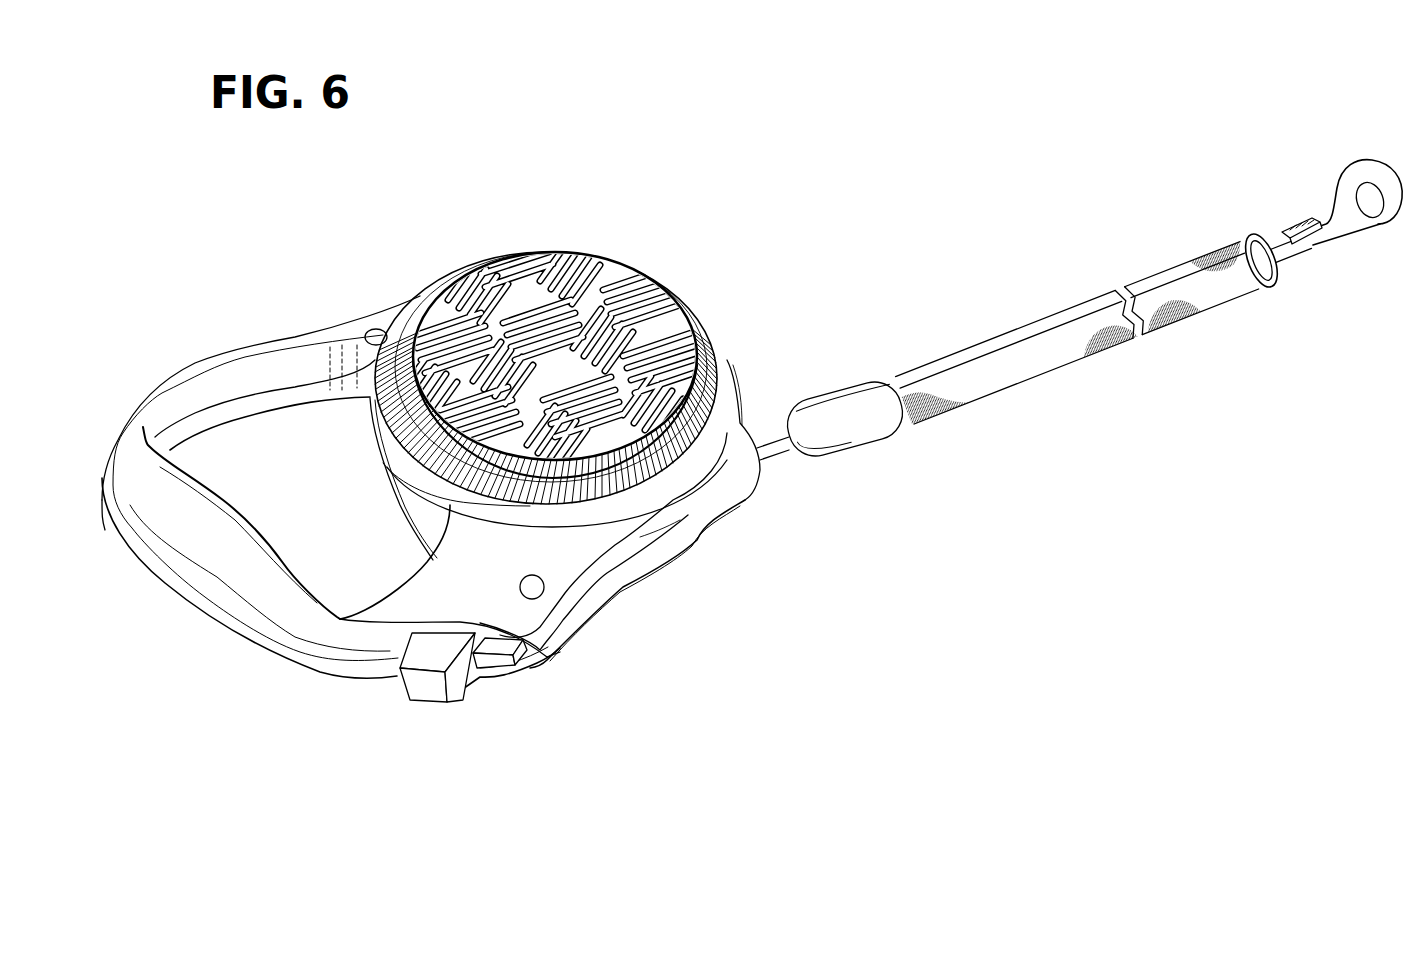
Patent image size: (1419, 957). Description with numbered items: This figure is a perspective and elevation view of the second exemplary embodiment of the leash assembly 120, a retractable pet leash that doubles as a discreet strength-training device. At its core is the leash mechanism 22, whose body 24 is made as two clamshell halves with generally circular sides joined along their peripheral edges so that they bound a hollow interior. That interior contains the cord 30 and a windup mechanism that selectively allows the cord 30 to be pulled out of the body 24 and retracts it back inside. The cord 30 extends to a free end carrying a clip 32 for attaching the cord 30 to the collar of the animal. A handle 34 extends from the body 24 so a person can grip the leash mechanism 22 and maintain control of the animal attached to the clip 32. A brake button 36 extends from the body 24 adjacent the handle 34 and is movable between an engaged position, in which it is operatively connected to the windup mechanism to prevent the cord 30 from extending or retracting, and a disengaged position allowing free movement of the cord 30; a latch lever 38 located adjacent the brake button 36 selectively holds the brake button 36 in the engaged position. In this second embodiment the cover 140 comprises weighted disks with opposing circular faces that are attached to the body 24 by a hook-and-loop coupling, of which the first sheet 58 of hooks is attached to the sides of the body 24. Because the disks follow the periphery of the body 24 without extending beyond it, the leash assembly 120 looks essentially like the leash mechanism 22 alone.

The leash assembly 120 is at (679, 213).
The leash mechanism 22 is at (252, 341).
The body 24 is at (718, 474).
The handle 34 is at (225, 570).
The brake button 36 is at (430, 693).
The latch lever 38 is at (492, 664).
The first sheet 58 is at (718, 343).
The cover 140 is at (478, 260).
The cord 30 is at (1035, 357).
The clip 32 is at (1332, 173).